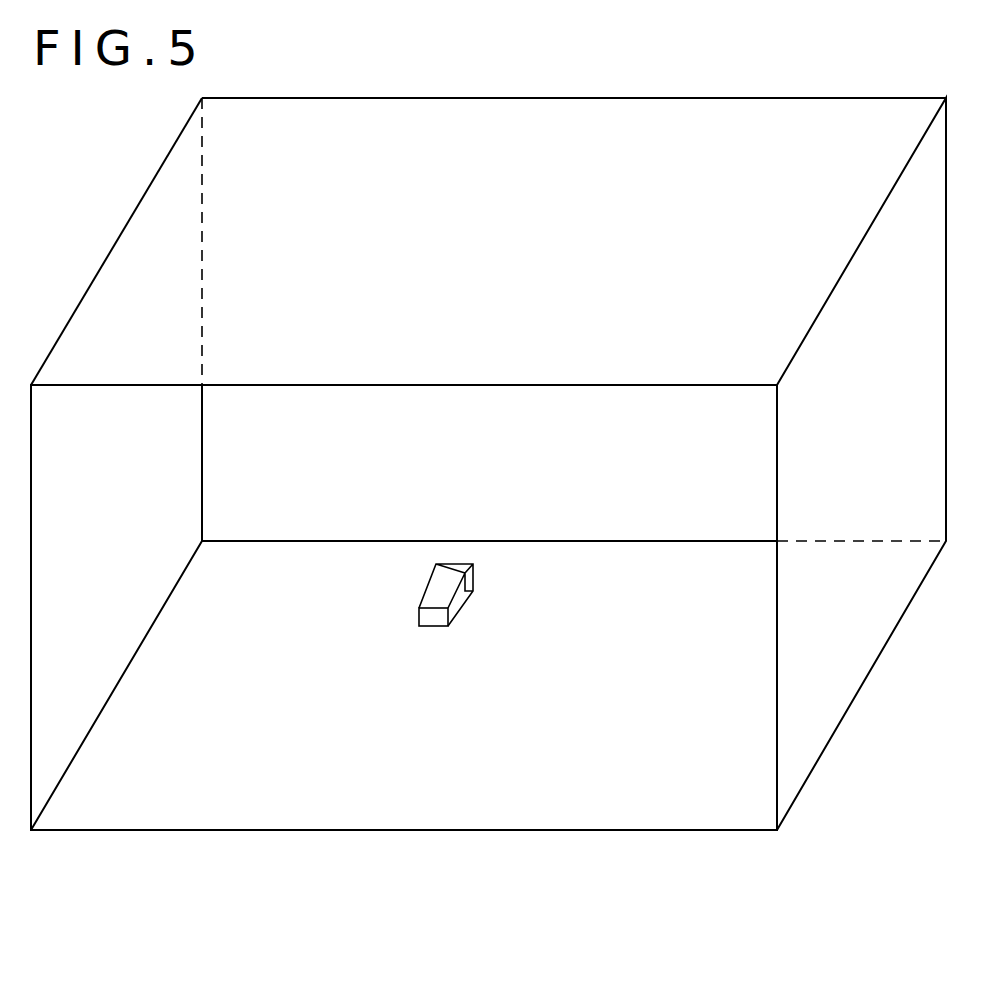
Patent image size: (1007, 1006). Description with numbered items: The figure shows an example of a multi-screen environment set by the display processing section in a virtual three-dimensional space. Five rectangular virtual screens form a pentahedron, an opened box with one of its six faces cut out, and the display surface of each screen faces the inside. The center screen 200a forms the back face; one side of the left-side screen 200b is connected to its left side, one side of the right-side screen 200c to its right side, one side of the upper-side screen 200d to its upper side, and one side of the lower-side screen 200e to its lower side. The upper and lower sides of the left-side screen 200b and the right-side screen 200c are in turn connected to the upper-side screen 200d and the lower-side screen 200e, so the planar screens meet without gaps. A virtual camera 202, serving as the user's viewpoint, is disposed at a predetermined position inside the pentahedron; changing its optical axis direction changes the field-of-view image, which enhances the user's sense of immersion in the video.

The center screen 200a is at (570, 482).
The left-side screen 200b is at (117, 464).
The right-side screen 200c is at (855, 463).
The upper-side screen 200d is at (488, 242).
The lower-side screen 200e is at (443, 812).
The virtual camera 202 is at (433, 616).